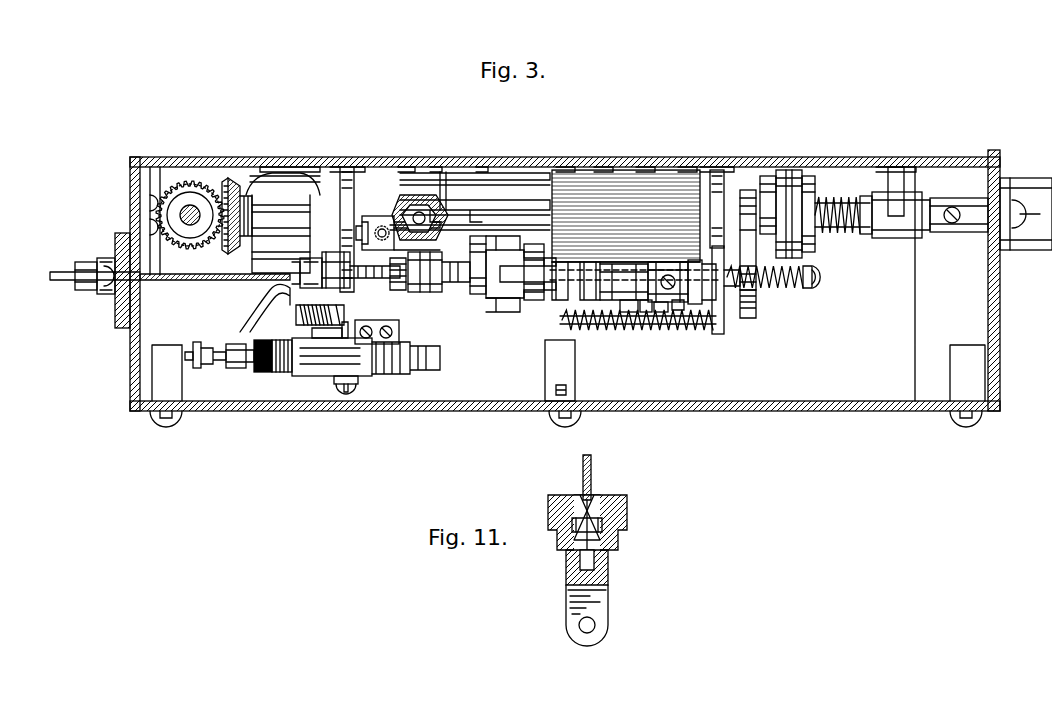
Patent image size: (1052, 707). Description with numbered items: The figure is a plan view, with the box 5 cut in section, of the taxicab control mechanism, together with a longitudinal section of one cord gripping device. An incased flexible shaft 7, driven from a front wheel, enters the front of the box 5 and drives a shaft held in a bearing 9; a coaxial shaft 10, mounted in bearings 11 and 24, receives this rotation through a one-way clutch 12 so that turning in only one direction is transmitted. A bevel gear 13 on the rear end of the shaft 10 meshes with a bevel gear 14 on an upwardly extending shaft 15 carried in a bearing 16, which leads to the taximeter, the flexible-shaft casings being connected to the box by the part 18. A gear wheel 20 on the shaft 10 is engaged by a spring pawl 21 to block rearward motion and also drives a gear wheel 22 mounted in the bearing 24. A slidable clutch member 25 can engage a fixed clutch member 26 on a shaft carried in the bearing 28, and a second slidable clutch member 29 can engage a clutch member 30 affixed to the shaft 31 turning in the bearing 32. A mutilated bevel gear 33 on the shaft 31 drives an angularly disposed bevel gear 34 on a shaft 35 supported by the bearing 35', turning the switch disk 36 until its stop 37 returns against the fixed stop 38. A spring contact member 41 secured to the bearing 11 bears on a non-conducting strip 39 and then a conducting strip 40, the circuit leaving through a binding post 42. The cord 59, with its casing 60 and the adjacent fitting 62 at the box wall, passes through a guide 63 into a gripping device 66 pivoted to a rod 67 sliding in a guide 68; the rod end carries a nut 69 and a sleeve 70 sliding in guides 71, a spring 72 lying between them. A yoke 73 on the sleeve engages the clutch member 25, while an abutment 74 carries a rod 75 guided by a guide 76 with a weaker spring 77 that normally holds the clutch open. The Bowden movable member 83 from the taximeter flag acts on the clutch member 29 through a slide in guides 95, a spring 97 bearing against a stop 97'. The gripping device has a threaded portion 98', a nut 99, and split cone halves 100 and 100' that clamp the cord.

In FIG. 3, the box 5 is at (652, 163).
In FIG. 3, the incased flexible shaft 7 is at (966, 222).
In FIG. 3, the bearing 9 is at (896, 226).
In FIG. 3, the shaft 10 is at (398, 222).
In FIG. 3, the bearing 11 is at (283, 220).
In FIG. 3, the one-way clutch 12 is at (810, 190).
In FIG. 3, the bevel gear 13 is at (236, 180).
In FIG. 3, the bevel gear 14 is at (205, 185).
In FIG. 3, the upwardly extending shaft 15 is at (190, 205).
In FIG. 3, the bearing 16 is at (172, 192).
In FIG. 3, the part 18 is at (1022, 190).
In FIG. 3, the gear wheel 20 is at (762, 196).
In FIG. 3, the spring pawl 21 is at (768, 172).
In FIG. 3, the gear wheel 22 is at (756, 316).
In FIG. 3, the bearing 24 is at (718, 170).
In FIG. 3, the clutch member 25 is at (664, 318).
In FIG. 3, the clutch member 26 is at (620, 328).
In FIG. 3, the bearing 28 is at (598, 290).
In FIG. 3, the clutch member 29 is at (528, 302).
In FIG. 3, the clutch member 30 is at (480, 296).
In FIG. 3, the shaft 31 is at (396, 281).
In FIG. 3, the bearing 32 is at (440, 292).
In FIG. 3, the mutilated bevel gear 33 is at (402, 292).
In FIG. 3, the bevel gear 34 is at (298, 308).
In FIG. 3, the shaft 35 is at (366, 385).
In FIG. 3, the bearing 35' is at (352, 213).
In FIG. 3, the switch disk 36 is at (314, 372).
In FIG. 3, the stop 37 is at (377, 332).
In FIG. 3, the fixed stop 38 is at (344, 330).
In FIG. 3, the strip of non-conducting material 39 is at (260, 374).
In FIG. 3, the strip of conducting material 40 is at (289, 356).
In FIG. 3, the spring contact member 41 is at (246, 366).
In FIG. 3, the binding post 42 is at (197, 342).
In FIG. 3, the cord 59 is at (65, 283).
In FIG. 3, the casing 60 is at (86, 292).
In FIG. 3, the bushing 62 is at (106, 262).
In FIG. 3, the guide 63 is at (312, 262).
In FIG. 3, the gripping device 66 is at (512, 300).
In FIG. 3, the rod 67 is at (566, 268).
In FIG. 3, the guide 68 is at (600, 258).
In FIG. 3, the nut 69 is at (818, 280).
In FIG. 3, the sleeve 70 is at (706, 290).
In FIG. 3, the guides 71 is at (672, 260).
In FIG. 3, the spring 72 is at (750, 292).
In FIG. 3, the yoke 73 is at (680, 312).
In FIG. 3, the abutment 74 is at (724, 326).
In FIG. 3, the rod 75 is at (648, 330).
In FIG. 3, the guide 76 is at (551, 336).
In FIG. 3, the spring 77 is at (630, 330).
In FIG. 3, the movable member 83 is at (430, 212).
In FIG. 3, the guides 95 is at (542, 205).
In FIG. 3, the spring 97 is at (377, 219).
In FIG. 3, the stop 97' is at (339, 214).
In FIG. 11, the externally screwthreaded portion 98' is at (609, 598).
In FIG. 11, the nut 99 is at (622, 515).
In FIG. 11, the part of double-coned inner member 100 is at (610, 507).
In FIG. 11, the part of double-coned inner member 100' is at (575, 500).